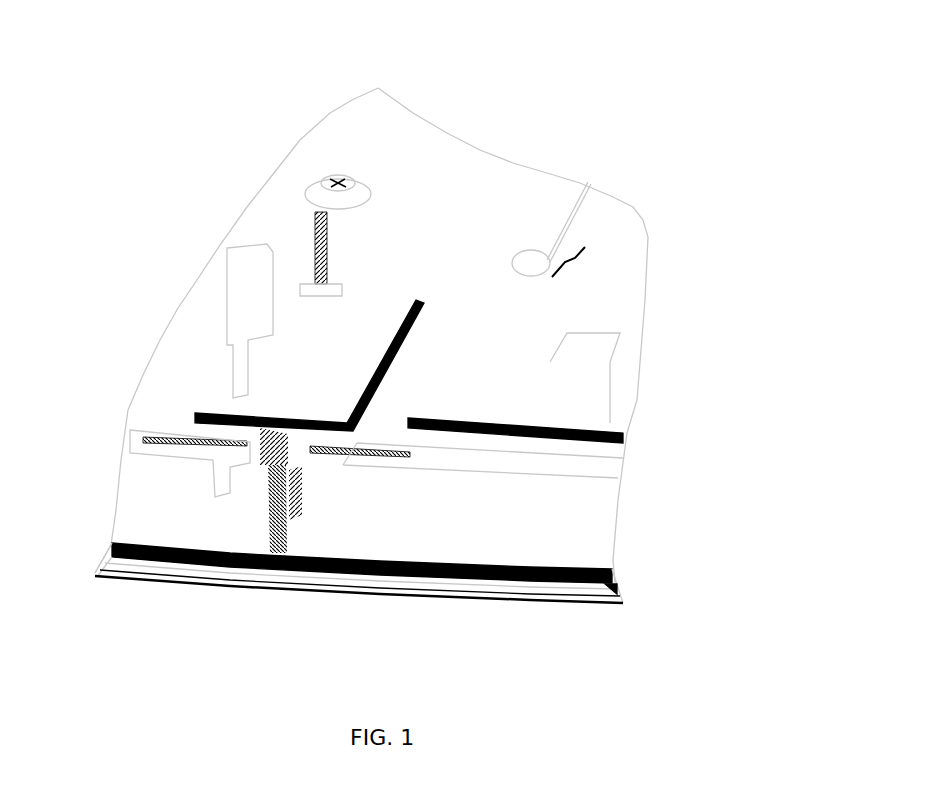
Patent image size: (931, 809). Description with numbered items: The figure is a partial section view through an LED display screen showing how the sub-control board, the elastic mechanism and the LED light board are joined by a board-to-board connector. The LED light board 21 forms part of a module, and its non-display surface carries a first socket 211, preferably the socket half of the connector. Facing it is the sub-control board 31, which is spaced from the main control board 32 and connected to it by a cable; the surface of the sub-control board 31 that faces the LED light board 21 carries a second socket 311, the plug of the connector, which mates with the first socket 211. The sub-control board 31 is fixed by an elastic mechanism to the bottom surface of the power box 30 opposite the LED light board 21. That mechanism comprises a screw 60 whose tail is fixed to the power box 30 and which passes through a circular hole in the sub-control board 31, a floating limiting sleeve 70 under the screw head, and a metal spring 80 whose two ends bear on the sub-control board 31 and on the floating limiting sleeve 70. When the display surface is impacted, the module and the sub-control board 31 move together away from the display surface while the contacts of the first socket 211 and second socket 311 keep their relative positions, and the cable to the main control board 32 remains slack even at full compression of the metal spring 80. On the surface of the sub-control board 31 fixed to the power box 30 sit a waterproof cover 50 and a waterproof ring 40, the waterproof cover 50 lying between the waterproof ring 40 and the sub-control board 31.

The LED light board 21 is at (387, 577).
The first socket 211 is at (270, 553).
The power box 30 is at (535, 477).
The sub-control board 31 is at (297, 403).
The second socket 311 is at (237, 425).
The main control board 32 is at (535, 290).
The waterproof ring 40 is at (173, 438).
The waterproof cover 50 is at (200, 448).
The screw 60 is at (345, 177).
The floating limiting sleeve 70 is at (318, 240).
The metal spring 80 is at (308, 290).